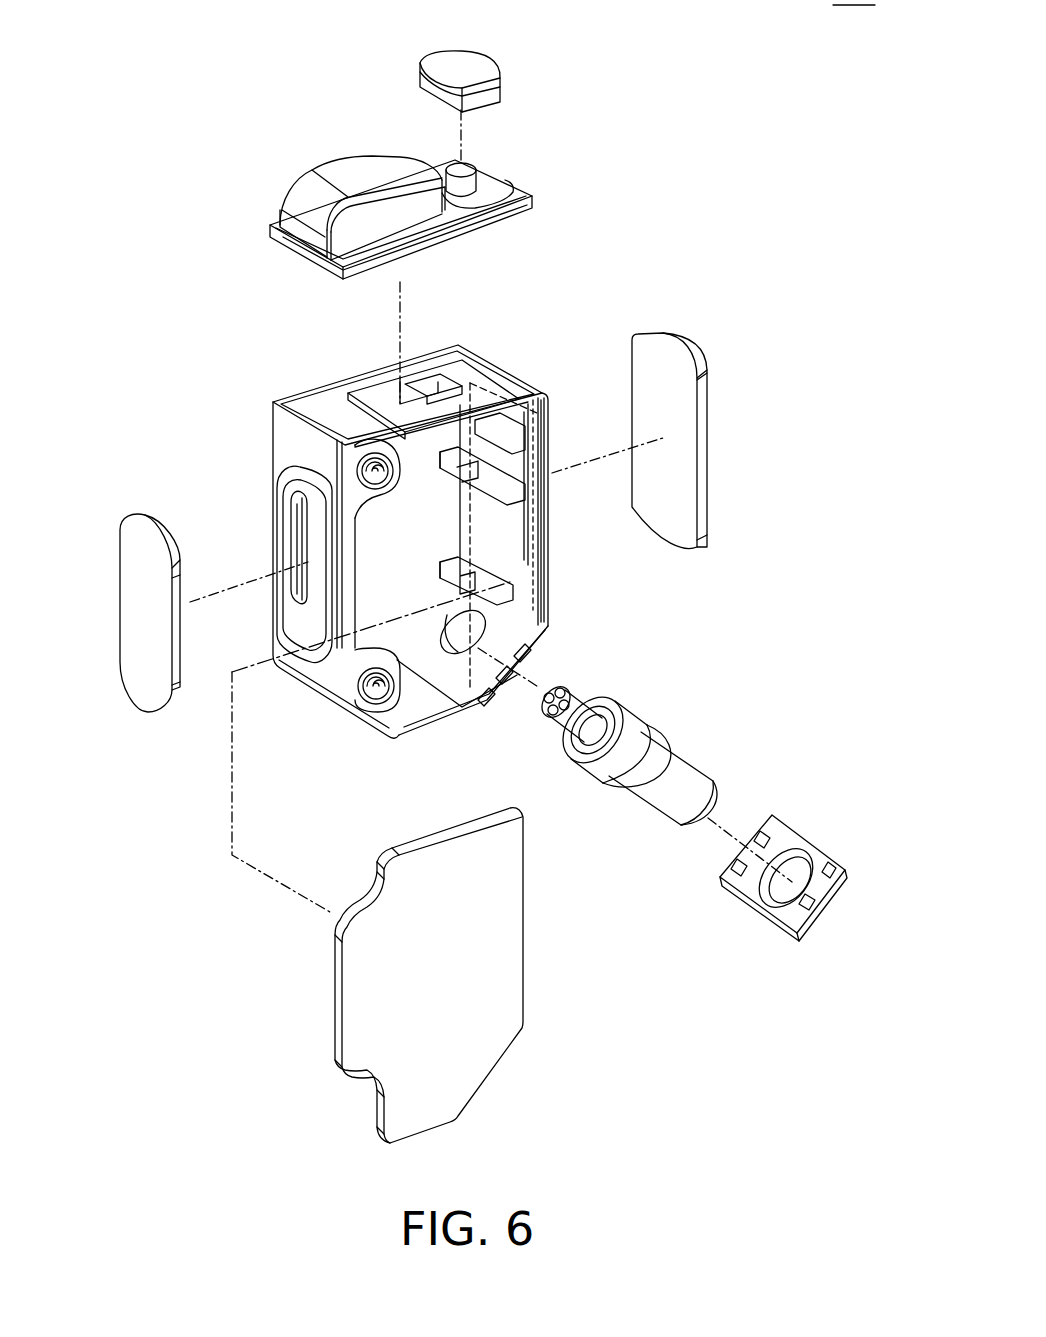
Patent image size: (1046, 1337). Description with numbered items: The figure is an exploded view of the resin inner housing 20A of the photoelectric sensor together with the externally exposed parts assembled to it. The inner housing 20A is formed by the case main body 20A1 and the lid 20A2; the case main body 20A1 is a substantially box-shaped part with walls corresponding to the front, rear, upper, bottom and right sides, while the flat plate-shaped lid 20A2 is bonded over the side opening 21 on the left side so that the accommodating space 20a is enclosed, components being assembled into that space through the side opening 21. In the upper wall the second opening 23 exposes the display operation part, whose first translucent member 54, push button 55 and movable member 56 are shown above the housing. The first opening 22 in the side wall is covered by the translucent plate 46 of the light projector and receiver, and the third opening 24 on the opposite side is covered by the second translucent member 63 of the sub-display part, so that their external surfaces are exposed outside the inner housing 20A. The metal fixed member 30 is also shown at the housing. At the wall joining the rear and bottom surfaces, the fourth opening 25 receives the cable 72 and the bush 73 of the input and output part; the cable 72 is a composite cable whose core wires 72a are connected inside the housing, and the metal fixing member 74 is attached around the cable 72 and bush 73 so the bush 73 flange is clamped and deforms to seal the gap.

The push button 55 is at (462, 60).
The first translucent member 54 is at (344, 180).
The movable member 56 is at (492, 190).
The inner housing 20A is at (390, 516).
The case main body 20A1 is at (315, 408).
The lid 20A2 is at (483, 950).
The second opening 23 is at (431, 384).
The fixed member 30 is at (372, 472).
The first opening 22 is at (290, 535).
The accommodating space 20a is at (385, 552).
The translucent plate 46 is at (140, 570).
The second translucent member 63 is at (672, 392).
The third opening 24 is at (533, 530).
The side opening 21 is at (517, 542).
The fourth opening 25 is at (452, 632).
The cable 72 is at (664, 778).
The core wires 72a is at (573, 700).
The bush 73 is at (633, 743).
The fixing member 74 is at (783, 840).